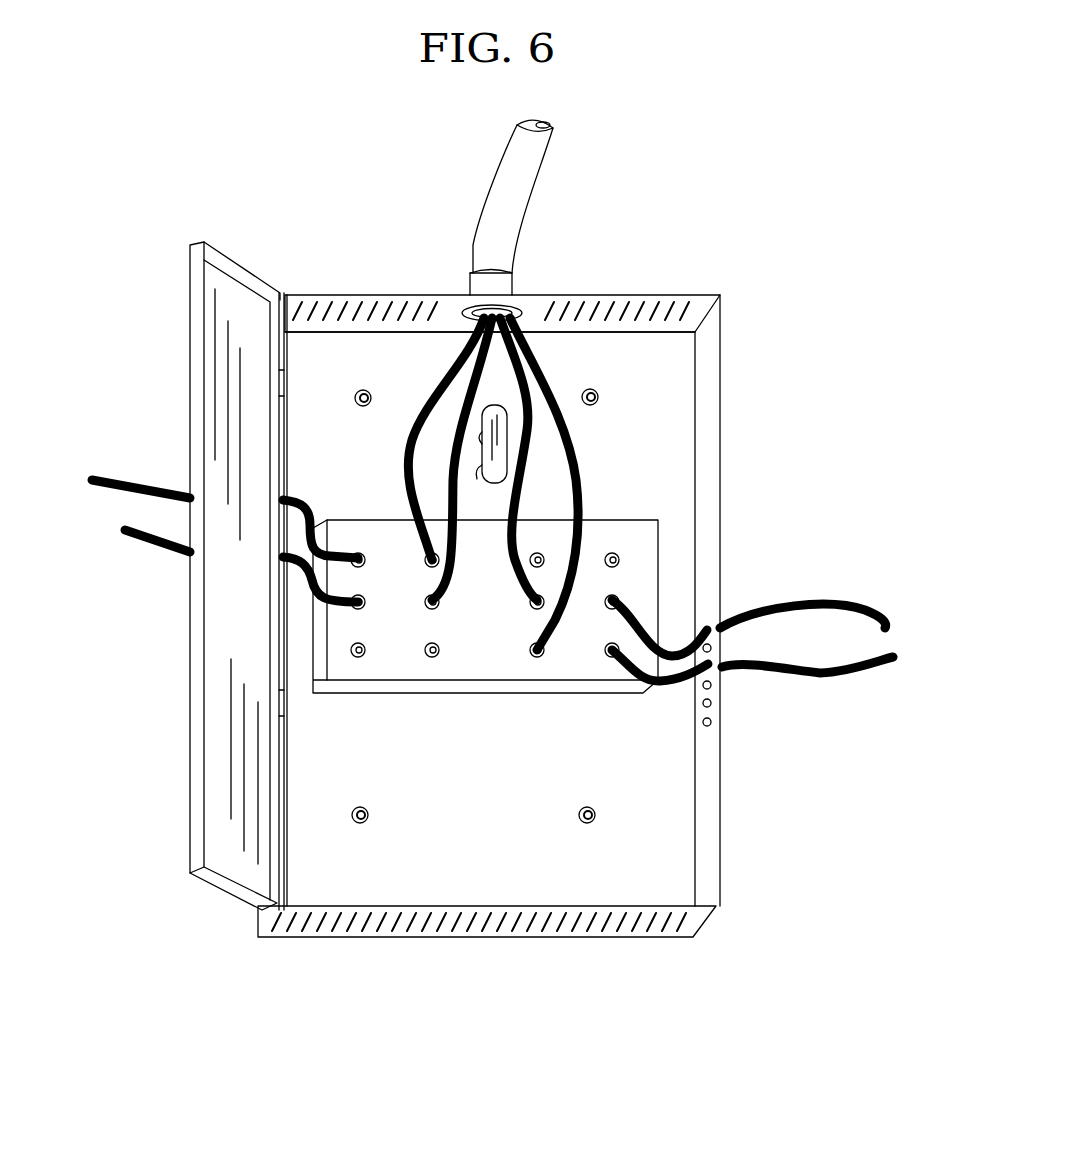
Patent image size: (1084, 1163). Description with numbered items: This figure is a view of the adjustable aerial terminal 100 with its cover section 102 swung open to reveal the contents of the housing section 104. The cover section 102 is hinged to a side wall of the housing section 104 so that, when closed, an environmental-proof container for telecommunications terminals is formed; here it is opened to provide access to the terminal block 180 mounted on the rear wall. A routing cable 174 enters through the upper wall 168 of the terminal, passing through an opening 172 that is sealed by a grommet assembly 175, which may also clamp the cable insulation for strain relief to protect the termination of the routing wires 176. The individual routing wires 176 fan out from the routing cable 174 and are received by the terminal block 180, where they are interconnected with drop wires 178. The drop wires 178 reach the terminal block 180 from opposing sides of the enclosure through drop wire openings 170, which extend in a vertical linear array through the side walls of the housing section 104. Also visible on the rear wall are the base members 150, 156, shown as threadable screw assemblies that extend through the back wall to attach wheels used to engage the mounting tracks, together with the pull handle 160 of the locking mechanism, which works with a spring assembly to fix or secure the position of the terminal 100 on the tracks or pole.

The adjustable aerial terminal 100 is at (824, 271).
The cover section 102 is at (185, 638).
The housing section 104 is at (718, 772).
The base member 150 is at (360, 394).
The base member 156 is at (362, 824).
The pull handle 160 is at (479, 470).
The upper wall 168 is at (613, 293).
The drop wire openings 170 is at (715, 684).
The opening 172 is at (468, 318).
The routing cable 174 is at (482, 198).
The grommet assembly 175 is at (513, 284).
The routing wire 176 is at (537, 403).
The drop wire 178 is at (125, 532).
The terminal block 180 is at (493, 702).